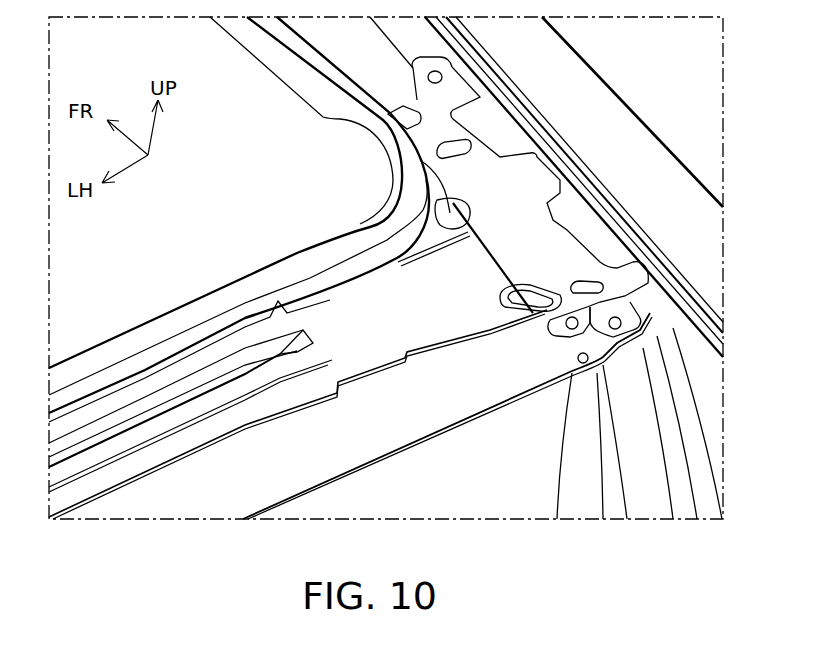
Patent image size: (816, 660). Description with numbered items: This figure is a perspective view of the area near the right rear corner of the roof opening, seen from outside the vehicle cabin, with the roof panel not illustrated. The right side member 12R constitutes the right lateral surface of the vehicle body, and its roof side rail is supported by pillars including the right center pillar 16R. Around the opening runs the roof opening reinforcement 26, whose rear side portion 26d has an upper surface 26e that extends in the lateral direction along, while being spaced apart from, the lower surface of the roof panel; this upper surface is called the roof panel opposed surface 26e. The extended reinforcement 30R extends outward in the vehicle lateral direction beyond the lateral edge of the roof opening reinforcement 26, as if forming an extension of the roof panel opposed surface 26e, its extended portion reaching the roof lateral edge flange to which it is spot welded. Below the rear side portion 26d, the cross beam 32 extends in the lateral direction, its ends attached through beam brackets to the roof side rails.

The right side member 12R is at (593, 100).
The extended reinforcement 30R is at (535, 250).
The roof opening reinforcement 26 is at (188, 285).
The rear side portion 26d is at (313, 307).
The roof panel opposed surface 26e is at (376, 288).
The cross beam 32 is at (405, 432).
The right center pillar 16R is at (585, 480).